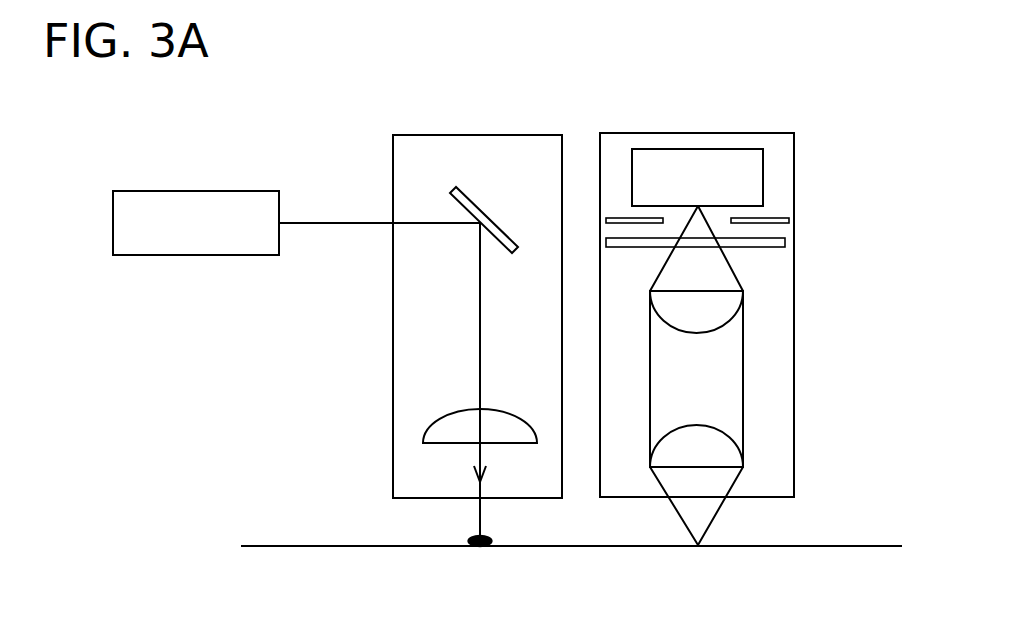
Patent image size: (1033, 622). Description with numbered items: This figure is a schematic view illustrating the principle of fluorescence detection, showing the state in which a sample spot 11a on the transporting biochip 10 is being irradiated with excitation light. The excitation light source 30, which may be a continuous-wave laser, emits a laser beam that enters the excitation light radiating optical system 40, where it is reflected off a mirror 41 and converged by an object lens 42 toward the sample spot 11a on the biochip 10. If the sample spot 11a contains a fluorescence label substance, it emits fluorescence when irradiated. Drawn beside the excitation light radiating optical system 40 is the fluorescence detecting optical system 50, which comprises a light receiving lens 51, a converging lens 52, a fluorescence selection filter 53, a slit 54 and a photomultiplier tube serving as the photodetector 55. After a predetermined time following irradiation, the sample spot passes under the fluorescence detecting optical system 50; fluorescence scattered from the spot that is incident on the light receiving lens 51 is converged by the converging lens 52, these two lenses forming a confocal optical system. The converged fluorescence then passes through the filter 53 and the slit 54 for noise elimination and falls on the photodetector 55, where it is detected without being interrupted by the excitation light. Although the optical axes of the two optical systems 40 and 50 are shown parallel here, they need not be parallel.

The biochip 10 is at (865, 552).
The sample spot 11a is at (485, 550).
The excitation light source 30 is at (200, 193).
The excitation light radiating optical system 40 is at (393, 336).
The mirror 41 is at (460, 196).
The object lens 42 is at (440, 430).
The fluorescence detecting optical system 50 is at (783, 133).
The light receiving lens 51 is at (718, 453).
The converging lens 52 is at (722, 307).
The fluorescence selection filter 53 is at (785, 242).
The slit 54 is at (786, 218).
The photodetector 55 is at (700, 150).